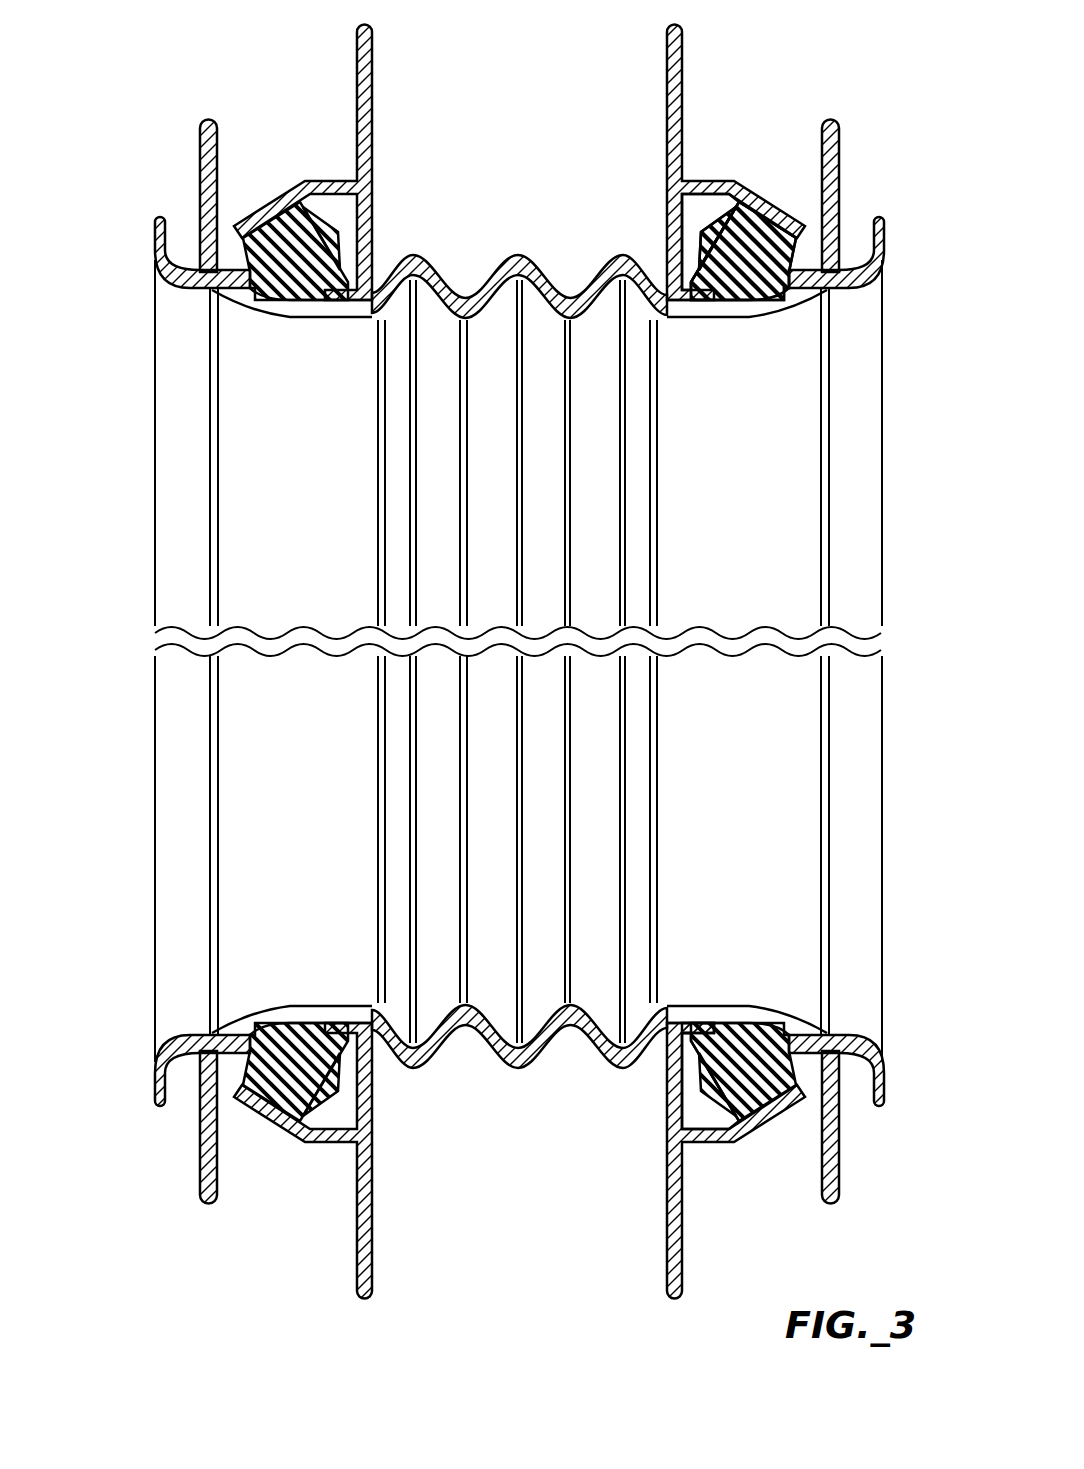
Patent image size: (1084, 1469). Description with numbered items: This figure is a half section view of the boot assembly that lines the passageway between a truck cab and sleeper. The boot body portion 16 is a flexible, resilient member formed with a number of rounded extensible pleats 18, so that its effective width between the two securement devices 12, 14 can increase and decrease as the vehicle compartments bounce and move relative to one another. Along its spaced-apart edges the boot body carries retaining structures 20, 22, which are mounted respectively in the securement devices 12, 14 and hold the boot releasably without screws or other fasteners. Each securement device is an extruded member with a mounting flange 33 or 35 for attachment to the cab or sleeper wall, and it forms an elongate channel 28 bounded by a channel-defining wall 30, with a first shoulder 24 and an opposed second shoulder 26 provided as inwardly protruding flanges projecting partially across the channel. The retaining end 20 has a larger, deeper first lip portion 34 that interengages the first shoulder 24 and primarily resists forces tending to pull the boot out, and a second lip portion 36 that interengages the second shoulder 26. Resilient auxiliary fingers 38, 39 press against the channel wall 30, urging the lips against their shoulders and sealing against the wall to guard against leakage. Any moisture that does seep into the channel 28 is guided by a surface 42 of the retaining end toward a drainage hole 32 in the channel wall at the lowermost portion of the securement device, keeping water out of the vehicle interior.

The securement device 12 is at (690, 163).
The securement device 14 is at (190, 168).
The boot body portion 16 is at (510, 254).
The extensible pleats 18 is at (825, 472).
The retaining structure 20 is at (752, 326).
The retaining structure 22 is at (294, 324).
The first shoulder 24 is at (375, 232).
The second shoulder 26 is at (838, 280).
The channel 28 is at (712, 1105).
The channel-defining wall 30 is at (762, 1118).
The drainage hole 32 is at (665, 1117).
The mounting flange 33 is at (695, 80).
The first lip portion 34 is at (690, 240).
The mounting flange 35 is at (840, 1205).
The second lip portion 36 is at (783, 245).
The auxiliary finger 38 is at (785, 235).
The second auxiliary finger 39 is at (755, 220).
The surface 42 is at (667, 1090).